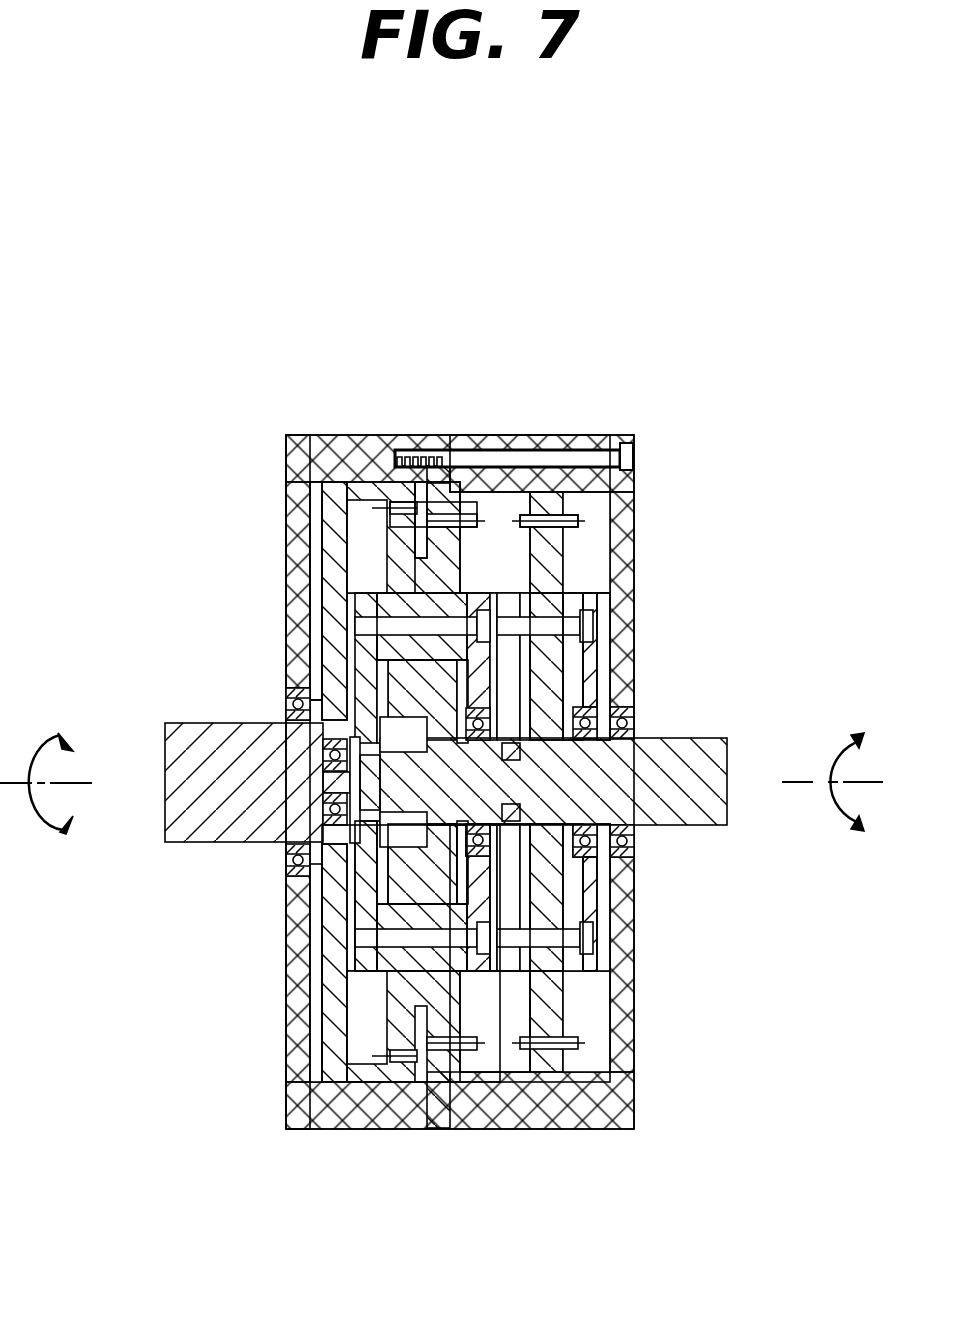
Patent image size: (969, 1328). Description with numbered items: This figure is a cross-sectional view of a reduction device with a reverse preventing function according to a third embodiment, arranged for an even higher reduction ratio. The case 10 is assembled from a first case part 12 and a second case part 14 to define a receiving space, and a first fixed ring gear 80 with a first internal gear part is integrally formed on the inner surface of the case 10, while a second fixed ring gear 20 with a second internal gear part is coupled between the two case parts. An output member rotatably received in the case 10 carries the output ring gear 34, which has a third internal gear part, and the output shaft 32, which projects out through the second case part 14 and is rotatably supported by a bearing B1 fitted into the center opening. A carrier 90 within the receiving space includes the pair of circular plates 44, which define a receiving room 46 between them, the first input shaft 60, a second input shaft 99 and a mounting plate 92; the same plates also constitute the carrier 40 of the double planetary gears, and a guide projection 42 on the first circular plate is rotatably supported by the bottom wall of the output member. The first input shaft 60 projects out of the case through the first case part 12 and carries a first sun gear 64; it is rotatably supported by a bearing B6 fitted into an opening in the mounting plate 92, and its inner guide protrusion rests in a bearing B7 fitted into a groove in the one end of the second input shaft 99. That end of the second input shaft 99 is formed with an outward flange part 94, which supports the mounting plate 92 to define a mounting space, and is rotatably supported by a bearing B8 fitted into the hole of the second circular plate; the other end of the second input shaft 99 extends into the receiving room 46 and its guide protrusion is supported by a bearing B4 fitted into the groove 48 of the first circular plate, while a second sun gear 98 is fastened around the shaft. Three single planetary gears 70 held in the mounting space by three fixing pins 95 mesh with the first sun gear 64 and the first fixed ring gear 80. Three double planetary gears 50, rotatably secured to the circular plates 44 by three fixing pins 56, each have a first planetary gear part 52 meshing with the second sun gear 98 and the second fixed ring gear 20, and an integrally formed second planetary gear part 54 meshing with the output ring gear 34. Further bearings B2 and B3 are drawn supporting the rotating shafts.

The case 10 is at (488, 272).
The first case part 12 is at (473, 437).
The second case part 14 is at (413, 437).
The second fixed ring gear 20 is at (480, 465).
The output shaft 32 is at (227, 737).
The output ring gear 34 is at (380, 506).
The carrier 40 is at (195, 975).
The guide projection 42 is at (345, 880).
The circular plates 44 is at (387, 960).
The receiving room 46 is at (380, 930).
The groove 48 is at (365, 900).
The double planetary gears 50 is at (212, 336).
The first planetary gear part 52 is at (325, 497).
The second planetary gear part 54 is at (298, 503).
The fixing pins 56 is at (385, 627).
The first input shaft 60 is at (692, 760).
The first sun gear 64 is at (600, 660).
The single planetary gears 70 is at (548, 565).
The first fixed ring gear 80 is at (553, 508).
The carrier 90 is at (563, 1198).
The mounting plate 92 is at (587, 960).
The outward flange part 94 is at (510, 960).
The fixing pins 95 is at (590, 612).
The second sun gear 98 is at (460, 975).
The second input shaft 99 is at (428, 1087).
The bearing B1 is at (290, 698).
The bearing B2 is at (323, 767).
The bearing B3 is at (635, 843).
The bearing B4 is at (312, 680).
The bearing B6 is at (588, 845).
The bearing B7 is at (493, 853).
The bearing B8 is at (512, 870).